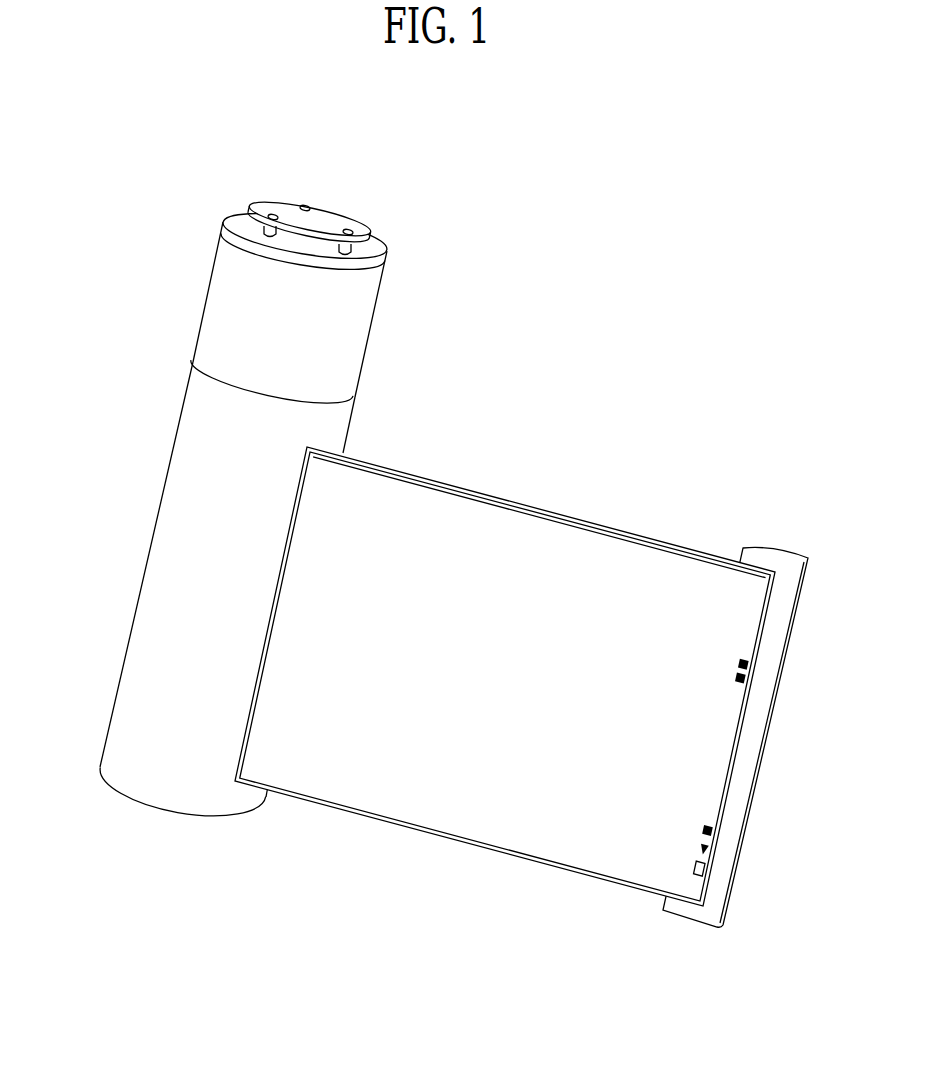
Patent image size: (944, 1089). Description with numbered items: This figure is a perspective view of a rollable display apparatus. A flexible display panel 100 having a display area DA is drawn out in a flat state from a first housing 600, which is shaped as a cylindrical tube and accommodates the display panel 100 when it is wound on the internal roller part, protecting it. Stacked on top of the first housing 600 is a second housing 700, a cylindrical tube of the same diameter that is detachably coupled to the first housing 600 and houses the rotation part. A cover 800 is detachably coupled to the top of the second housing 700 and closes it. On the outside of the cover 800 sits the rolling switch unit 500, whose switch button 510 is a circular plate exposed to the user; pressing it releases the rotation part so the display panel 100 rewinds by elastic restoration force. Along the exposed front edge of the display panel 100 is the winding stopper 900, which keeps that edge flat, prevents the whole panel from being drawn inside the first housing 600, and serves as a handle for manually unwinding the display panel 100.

The display panel 100 is at (660, 518).
The display area DA is at (545, 548).
The rolling switch unit 500 is at (354, 207).
The switch button 510 is at (338, 225).
The first housing 600 is at (167, 527).
The second housing 700 is at (217, 305).
The cover 800 is at (233, 220).
The winding stopper 900 is at (800, 538).